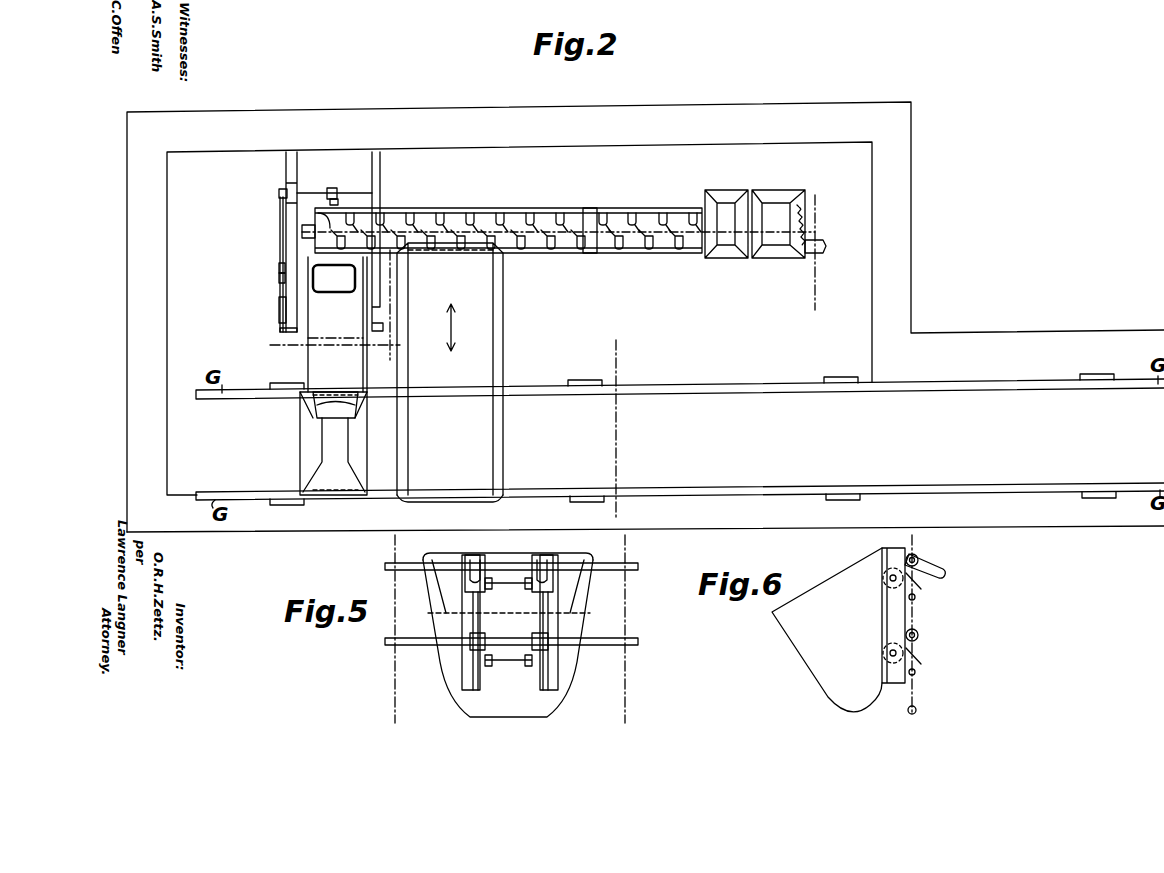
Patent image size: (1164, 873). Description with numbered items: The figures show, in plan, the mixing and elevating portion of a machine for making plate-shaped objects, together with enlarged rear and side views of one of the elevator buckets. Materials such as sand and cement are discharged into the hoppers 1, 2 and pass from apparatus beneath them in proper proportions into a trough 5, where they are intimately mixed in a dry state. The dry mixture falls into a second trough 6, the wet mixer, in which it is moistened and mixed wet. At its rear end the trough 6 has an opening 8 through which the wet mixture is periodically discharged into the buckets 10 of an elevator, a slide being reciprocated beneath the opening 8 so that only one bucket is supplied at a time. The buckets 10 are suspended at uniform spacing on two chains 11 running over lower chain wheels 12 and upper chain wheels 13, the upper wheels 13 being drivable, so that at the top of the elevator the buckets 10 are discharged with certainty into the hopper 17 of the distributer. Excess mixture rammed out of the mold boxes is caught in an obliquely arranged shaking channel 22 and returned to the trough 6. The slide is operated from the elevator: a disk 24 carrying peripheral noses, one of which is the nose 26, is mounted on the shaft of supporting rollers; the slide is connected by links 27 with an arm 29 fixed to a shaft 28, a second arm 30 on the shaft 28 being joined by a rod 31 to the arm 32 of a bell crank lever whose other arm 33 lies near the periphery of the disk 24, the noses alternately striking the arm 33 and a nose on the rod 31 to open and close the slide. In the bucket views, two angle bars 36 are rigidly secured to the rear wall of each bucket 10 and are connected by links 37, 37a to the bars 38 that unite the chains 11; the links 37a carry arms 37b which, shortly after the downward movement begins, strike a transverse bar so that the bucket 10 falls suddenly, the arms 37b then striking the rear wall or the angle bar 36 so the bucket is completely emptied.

In FIG. 2, the hopper 1 is at (775, 210).
In FIG. 2, the hopper 2 is at (728, 205).
In FIG. 2, the trough 5 is at (649, 212).
In FIG. 2, the second trough 6 is at (458, 212).
In FIG. 2, the opening 8 is at (317, 214).
In FIG. 2, the bucket 10 is at (335, 341).
In FIG. 5, the bucket 10 is at (508, 635).
In FIG. 6, the bucket 10 is at (827, 630).
In FIG. 5, the chain 11 is at (395, 677).
In FIG. 6, the chain 11 is at (915, 616).
In FIG. 2, the lower chain wheel 12 is at (308, 262).
In FIG. 2, the upper chain wheel 13 is at (363, 355).
In FIG. 2, the hopper 17 is at (315, 438).
In FIG. 2, the shaking channel 22 is at (450, 372).
In FIG. 2, the disk 24 is at (279, 275).
In FIG. 2, the nose 26 is at (279, 280).
In FIG. 2, the link 27 is at (330, 190).
In FIG. 2, the shaft 28 is at (308, 192).
In FIG. 2, the arm 29 is at (338, 198).
In FIG. 2, the arm 30 is at (283, 190).
In FIG. 2, the rod 31 is at (280, 216).
In FIG. 2, the arm of bell crank lever 32 is at (281, 331).
In FIG. 2, the arm of bell crank lever 33 is at (281, 310).
In FIG. 5, the angle bar 36 is at (462, 675).
In FIG. 6, the angle bar 36 is at (893, 684).
In FIG. 5, the link 37 is at (532, 665).
In FIG. 6, the link 37 is at (917, 655).
In FIG. 5, the link 37a is at (486, 590).
In FIG. 6, the link 37a is at (918, 592).
In FIG. 5, the arm 37b is at (468, 586).
In FIG. 6, the arm 37b is at (946, 575).
In FIG. 5, the bar 38 is at (404, 567).
In FIG. 6, the bar 38 is at (918, 560).